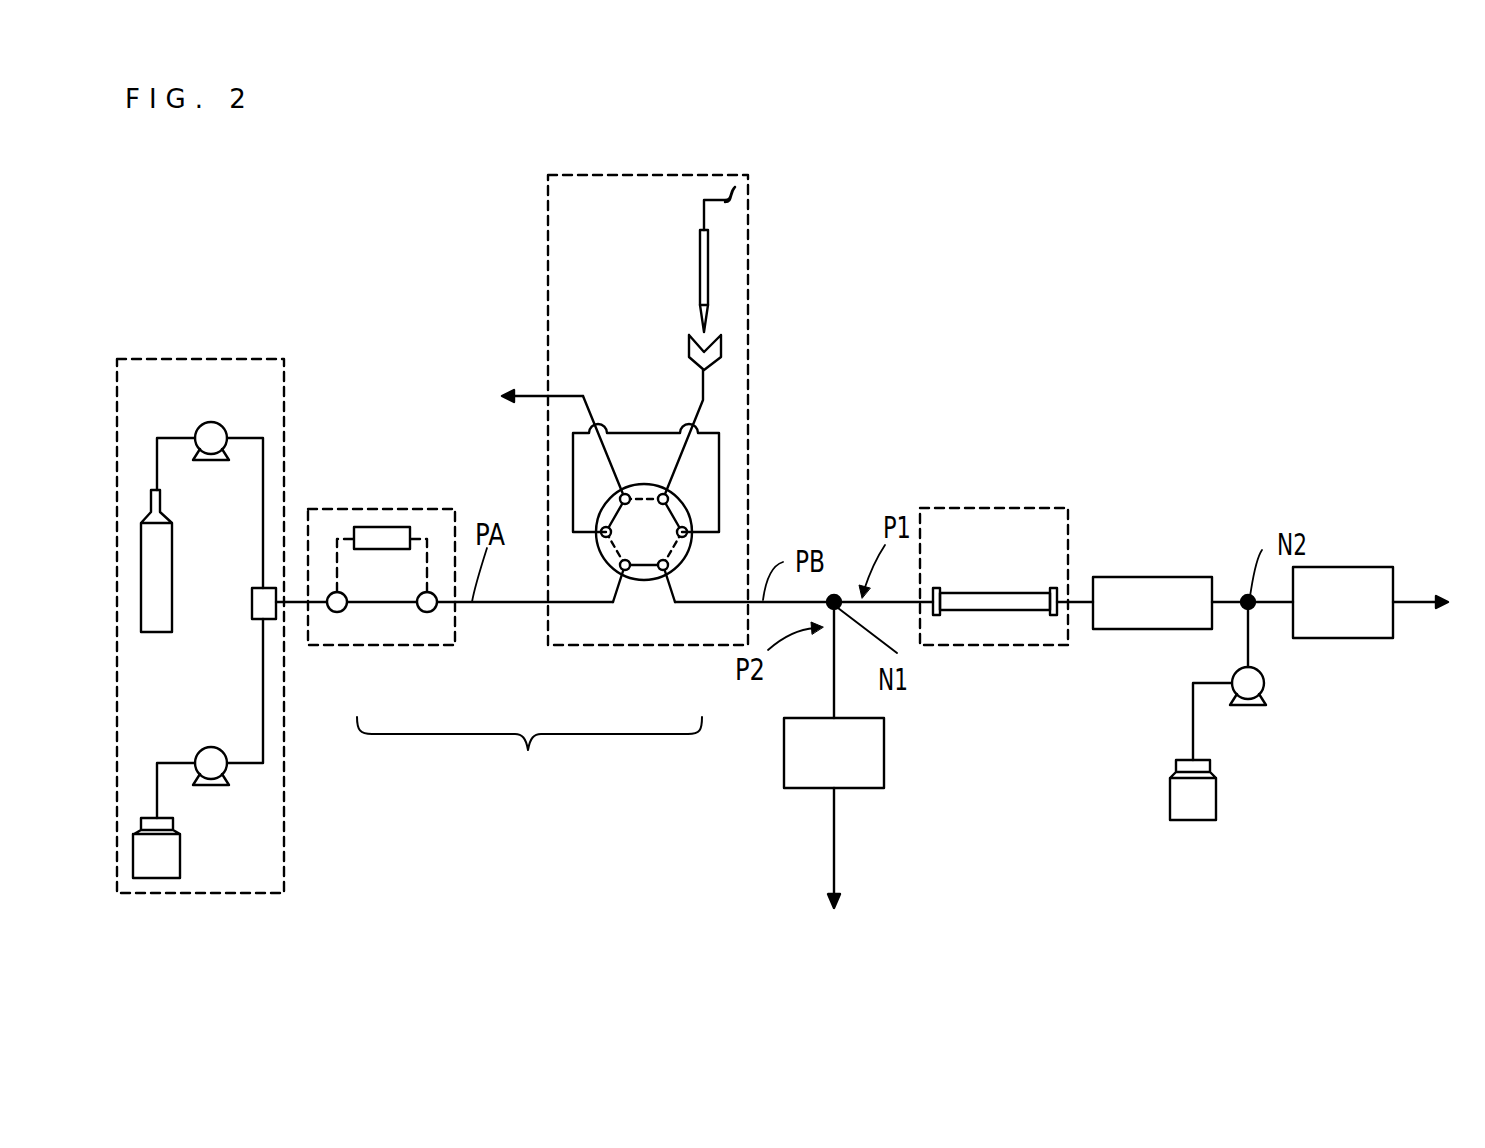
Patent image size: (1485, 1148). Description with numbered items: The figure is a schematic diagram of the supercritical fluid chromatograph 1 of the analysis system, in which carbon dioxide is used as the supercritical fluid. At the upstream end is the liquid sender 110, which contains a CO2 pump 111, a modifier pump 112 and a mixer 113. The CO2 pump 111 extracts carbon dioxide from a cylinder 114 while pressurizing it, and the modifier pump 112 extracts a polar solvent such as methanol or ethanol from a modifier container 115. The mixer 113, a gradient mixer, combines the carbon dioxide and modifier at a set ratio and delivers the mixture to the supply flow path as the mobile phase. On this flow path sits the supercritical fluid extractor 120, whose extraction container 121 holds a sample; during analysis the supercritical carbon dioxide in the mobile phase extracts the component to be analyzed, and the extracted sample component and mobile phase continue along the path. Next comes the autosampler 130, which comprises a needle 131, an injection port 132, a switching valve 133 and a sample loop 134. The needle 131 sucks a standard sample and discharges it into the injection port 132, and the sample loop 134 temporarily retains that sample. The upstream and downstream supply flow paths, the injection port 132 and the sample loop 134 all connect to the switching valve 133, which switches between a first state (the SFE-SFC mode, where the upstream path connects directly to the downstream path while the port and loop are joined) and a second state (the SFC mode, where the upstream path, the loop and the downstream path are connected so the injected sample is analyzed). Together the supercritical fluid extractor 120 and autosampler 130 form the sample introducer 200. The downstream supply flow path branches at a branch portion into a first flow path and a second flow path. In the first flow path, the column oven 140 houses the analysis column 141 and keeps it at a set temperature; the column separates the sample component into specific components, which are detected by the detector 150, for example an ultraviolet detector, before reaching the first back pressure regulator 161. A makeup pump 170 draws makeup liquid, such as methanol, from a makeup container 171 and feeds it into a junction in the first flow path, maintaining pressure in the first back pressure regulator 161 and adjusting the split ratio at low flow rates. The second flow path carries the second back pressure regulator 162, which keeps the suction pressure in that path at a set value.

The supercritical fluid chromatograph 1 is at (309, 244).
The liquid sender 110 is at (240, 358).
The CO2 pump 111 is at (205, 422).
The modifier pump 112 is at (200, 747).
The mixer 113 is at (250, 606).
The cylinder 114 is at (173, 578).
The modifier container 115 is at (182, 862).
The supercritical fluid extractor 120 is at (395, 646).
The extraction container 121 is at (390, 527).
The autosampler 130 is at (676, 646).
The needle 131 is at (700, 256).
The injection port 132 is at (690, 345).
The switching valve 133 is at (686, 502).
The sample loop 134 is at (643, 432).
The column oven 140 is at (1030, 508).
The analysis column 141 is at (972, 593).
The detector 150 is at (1148, 577).
The first back pressure regulator 161 is at (1305, 567).
The second back pressure regulator 162 is at (784, 757).
The makeup pump 170 is at (1264, 683).
The makeup container 171 is at (1217, 787).
The sample introducer 200 is at (529, 755).